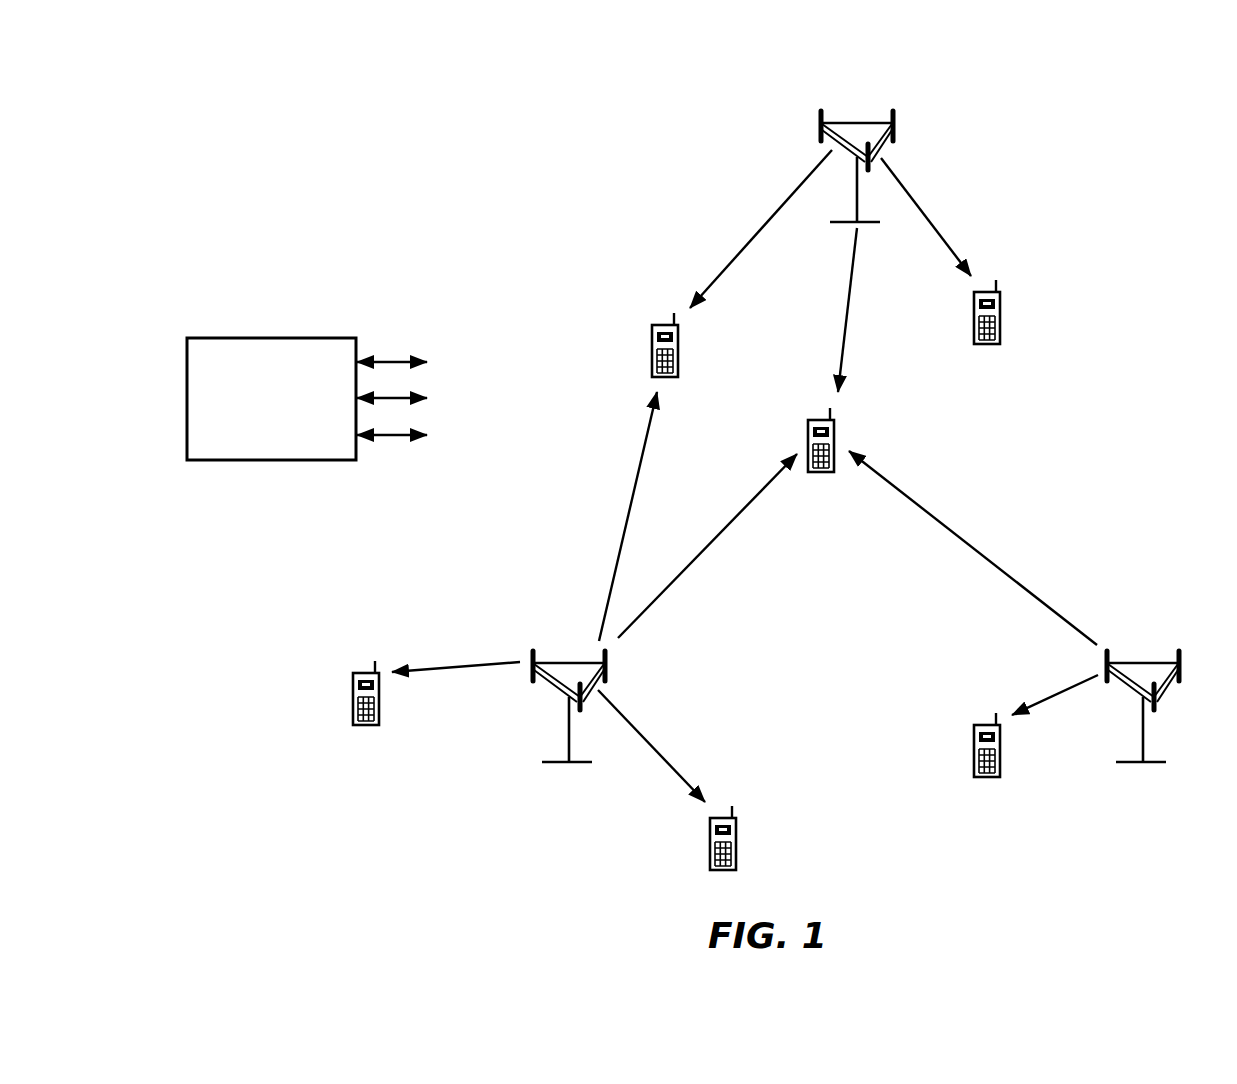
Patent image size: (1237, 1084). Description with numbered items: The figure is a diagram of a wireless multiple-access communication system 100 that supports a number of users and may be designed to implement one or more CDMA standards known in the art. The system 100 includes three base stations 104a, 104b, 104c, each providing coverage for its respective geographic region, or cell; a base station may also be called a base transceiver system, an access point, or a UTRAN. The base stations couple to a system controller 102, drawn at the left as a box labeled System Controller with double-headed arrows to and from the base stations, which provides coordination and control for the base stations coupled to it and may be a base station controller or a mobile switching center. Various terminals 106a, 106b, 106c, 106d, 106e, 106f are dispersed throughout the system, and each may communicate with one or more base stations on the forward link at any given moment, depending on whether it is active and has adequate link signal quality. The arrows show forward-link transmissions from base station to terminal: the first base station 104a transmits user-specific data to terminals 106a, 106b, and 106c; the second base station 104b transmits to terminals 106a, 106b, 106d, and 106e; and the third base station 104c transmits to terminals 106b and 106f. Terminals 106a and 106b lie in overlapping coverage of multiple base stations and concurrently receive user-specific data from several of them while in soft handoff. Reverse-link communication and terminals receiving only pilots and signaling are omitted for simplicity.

The wireless multiple-access communication system 100 is at (1112, 138).
The system controller 102 is at (265, 338).
The base station 104a is at (846, 123).
The base station 104b is at (562, 663).
The base station 104c is at (1136, 663).
The terminal 106a is at (664, 325).
The terminal 106b is at (817, 420).
The terminal 106c is at (1005, 275).
The terminal 106d is at (365, 673).
The terminal 106e is at (745, 800).
The terminal 106f is at (986, 725).